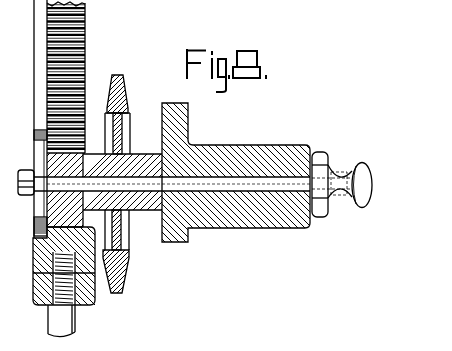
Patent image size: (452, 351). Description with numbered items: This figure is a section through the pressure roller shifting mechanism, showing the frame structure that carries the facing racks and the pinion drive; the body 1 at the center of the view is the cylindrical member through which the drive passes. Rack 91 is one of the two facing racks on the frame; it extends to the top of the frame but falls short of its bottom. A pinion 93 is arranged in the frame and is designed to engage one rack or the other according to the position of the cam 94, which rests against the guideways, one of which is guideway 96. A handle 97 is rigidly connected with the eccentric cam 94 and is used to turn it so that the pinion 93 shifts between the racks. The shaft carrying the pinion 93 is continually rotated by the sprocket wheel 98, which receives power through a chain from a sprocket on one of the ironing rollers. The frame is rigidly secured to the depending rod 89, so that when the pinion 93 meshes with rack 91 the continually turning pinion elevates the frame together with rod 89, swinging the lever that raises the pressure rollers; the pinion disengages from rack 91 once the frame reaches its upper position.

The body 1 is at (243, 147).
The depending rod 89 is at (63, 326).
The rack 91 is at (84, 44).
The pinion 93 is at (60, 144).
The cam 94 is at (34, 218).
The guideway 96 is at (42, 50).
The handle 97 is at (362, 181).
The sprocket wheel 98 is at (122, 76).